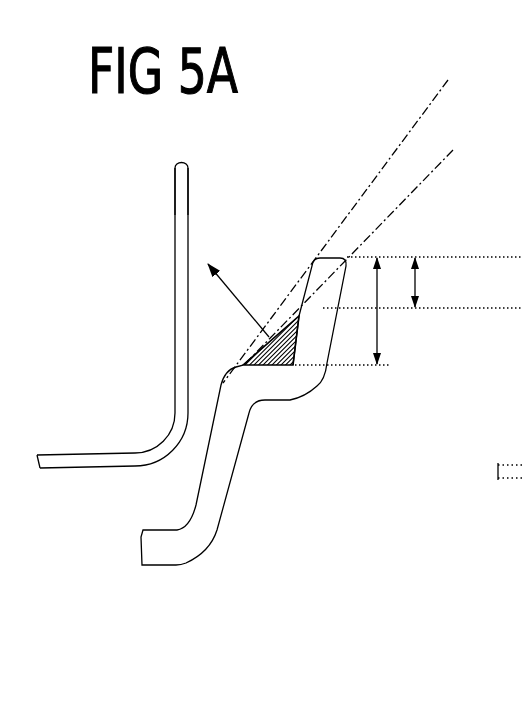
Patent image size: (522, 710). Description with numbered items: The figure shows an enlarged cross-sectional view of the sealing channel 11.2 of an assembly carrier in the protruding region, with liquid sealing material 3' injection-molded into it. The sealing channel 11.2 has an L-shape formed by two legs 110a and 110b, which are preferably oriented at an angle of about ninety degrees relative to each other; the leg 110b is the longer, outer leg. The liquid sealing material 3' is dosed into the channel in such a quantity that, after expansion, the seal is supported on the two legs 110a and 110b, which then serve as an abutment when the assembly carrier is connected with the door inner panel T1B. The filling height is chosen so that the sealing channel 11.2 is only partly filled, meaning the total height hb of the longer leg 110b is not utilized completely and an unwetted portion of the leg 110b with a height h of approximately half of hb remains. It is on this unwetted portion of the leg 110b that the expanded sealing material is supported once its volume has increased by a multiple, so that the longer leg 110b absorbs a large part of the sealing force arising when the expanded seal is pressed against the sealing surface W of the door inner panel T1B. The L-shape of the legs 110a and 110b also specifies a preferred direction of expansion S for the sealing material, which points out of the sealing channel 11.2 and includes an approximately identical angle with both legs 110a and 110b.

The sealing channel 11.2 is at (266, 367).
The leg 110a is at (230, 399).
The leg 110b is at (331, 257).
The liquid sealing material 3' is at (295, 398).
The door inner panel T1B is at (174, 202).
The sealing surface W is at (112, 316).
The direction of expansion S is at (238, 293).
The height of unwetted portion h is at (426, 282).
The total height of the longer leg hb is at (391, 311).